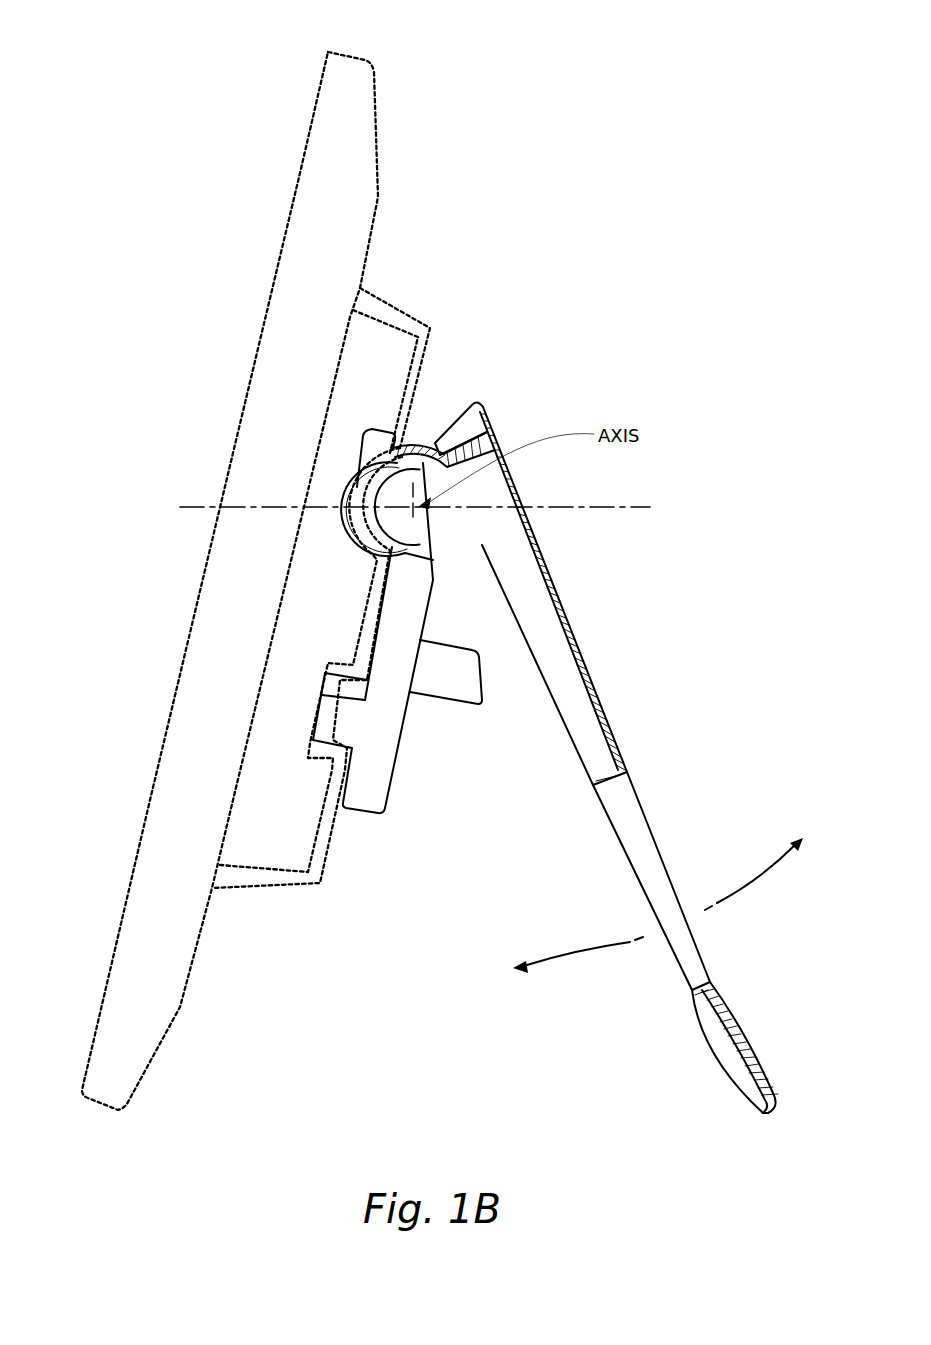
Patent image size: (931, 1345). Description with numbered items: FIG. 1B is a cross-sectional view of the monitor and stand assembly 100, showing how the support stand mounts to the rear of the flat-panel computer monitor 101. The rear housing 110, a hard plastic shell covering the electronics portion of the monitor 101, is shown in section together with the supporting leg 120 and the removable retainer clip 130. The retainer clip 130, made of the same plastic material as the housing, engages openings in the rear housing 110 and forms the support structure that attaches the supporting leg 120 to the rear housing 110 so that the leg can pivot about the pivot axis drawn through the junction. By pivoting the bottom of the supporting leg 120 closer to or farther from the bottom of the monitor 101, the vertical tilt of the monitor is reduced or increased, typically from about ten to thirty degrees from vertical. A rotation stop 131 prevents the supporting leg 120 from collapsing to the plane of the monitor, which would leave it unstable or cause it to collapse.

The display assembly enclosure 100 is at (194, 86).
The flat-panel computer monitor 101 is at (290, 197).
The rear housing 110 is at (430, 328).
The supporting leg 120 is at (610, 708).
The retainer clip 130 is at (378, 810).
The rotation stop 131 is at (478, 657).